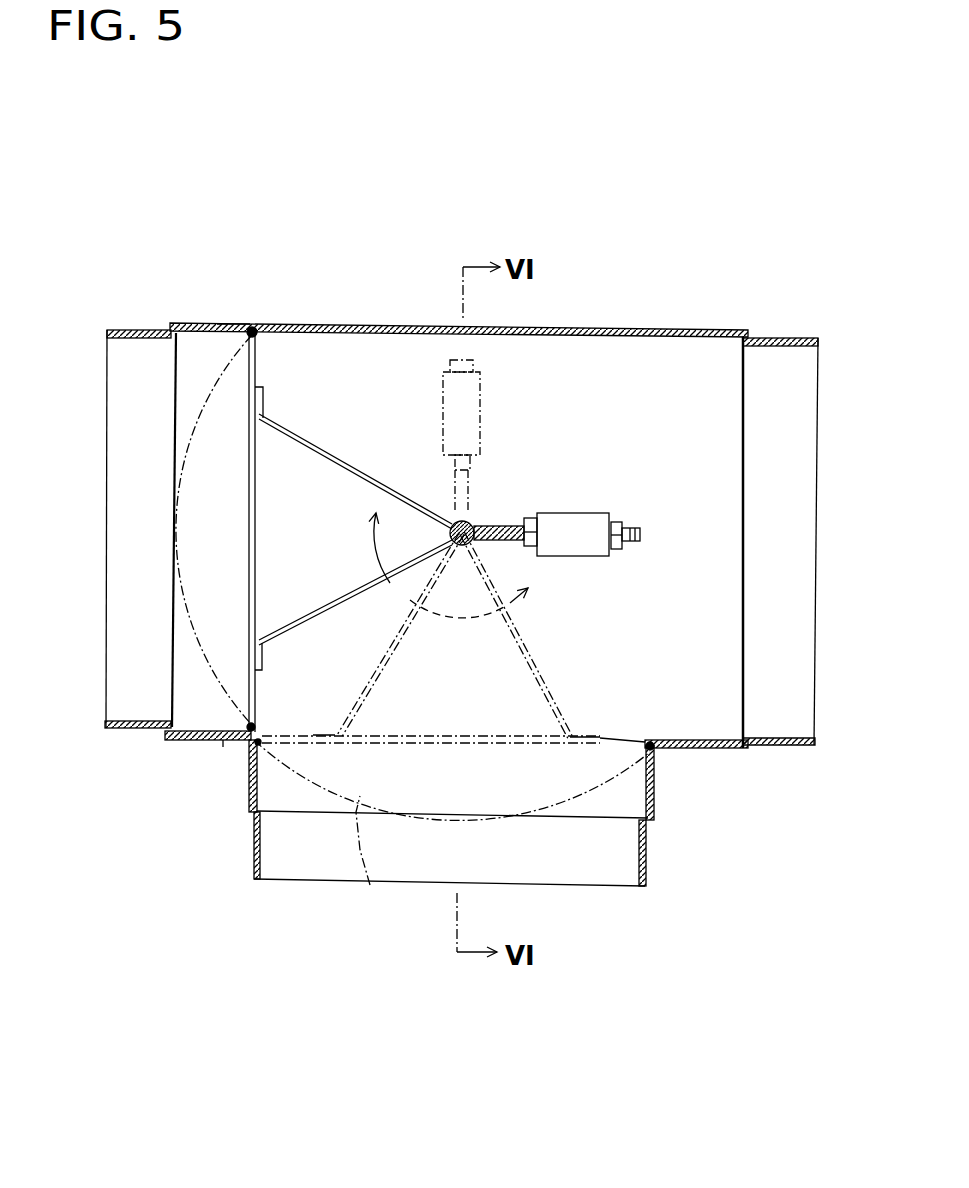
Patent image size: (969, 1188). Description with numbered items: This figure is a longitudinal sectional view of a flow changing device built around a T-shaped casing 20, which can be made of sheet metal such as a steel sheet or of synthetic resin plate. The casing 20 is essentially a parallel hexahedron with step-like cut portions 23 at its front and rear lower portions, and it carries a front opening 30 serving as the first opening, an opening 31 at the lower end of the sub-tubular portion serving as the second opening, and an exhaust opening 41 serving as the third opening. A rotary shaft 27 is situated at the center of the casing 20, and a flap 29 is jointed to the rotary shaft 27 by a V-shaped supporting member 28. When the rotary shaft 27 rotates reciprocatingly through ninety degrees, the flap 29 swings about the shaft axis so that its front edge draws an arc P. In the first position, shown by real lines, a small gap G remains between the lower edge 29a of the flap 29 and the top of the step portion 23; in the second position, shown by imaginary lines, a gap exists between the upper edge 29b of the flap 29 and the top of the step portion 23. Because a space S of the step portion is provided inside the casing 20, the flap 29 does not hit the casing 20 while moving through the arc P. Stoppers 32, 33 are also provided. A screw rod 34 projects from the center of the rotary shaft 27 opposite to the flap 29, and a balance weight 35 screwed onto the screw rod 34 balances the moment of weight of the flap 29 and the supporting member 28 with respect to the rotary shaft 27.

The casing 20 is at (567, 330).
The step-like cut portion 23 is at (237, 741).
The rotary shaft 27 is at (449, 515).
The V-shaped supporting member 28 is at (313, 440).
The flap 29 is at (257, 470).
The lower edge of the flap 29a is at (252, 724).
The upper edge of the flap 29b is at (249, 327).
The front opening 30 is at (122, 600).
The opening of the sub-tubular portion 31 is at (553, 867).
The stopper 32 is at (217, 324).
The stopper 33 is at (650, 820).
The screw rod 34 is at (490, 521).
The balance weight 35 is at (597, 513).
The third opening 41 is at (772, 625).
The space of the step portion S is at (195, 403).
The gap G is at (223, 747).
The arc P is at (370, 890).